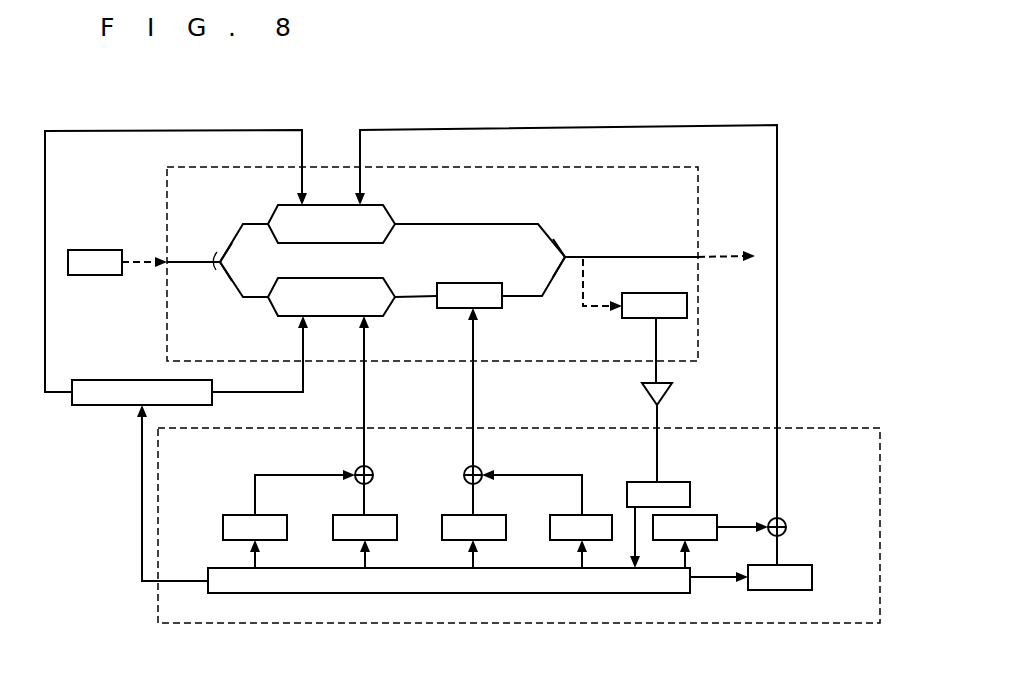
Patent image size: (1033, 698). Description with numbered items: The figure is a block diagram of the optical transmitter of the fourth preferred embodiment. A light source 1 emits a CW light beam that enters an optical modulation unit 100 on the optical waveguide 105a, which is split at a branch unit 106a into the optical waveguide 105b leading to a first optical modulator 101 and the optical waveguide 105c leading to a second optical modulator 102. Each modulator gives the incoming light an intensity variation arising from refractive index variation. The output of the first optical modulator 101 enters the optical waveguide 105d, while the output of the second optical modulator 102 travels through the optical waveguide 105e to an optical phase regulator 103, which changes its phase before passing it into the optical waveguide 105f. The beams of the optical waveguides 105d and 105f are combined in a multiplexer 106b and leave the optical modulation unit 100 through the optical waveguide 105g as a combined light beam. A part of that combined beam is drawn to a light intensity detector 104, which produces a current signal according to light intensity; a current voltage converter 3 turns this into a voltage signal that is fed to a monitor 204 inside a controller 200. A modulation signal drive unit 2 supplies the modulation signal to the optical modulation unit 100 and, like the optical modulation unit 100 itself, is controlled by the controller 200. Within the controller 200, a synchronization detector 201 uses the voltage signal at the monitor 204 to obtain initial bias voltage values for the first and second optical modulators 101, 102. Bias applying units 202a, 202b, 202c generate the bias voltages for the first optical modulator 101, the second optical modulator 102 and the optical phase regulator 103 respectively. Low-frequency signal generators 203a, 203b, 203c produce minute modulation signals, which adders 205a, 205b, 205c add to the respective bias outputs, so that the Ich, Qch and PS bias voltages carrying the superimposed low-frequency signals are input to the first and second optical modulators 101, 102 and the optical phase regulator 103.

The light source 1 is at (85, 250).
The modulation signal drive unit 2 is at (87, 380).
The current voltage converter 3 is at (672, 384).
The optical modulation unit 100 is at (602, 166).
The first optical modulator 101 is at (380, 206).
The second optical modulator 102 is at (364, 278).
The optical phase regulator 103 is at (452, 283).
The light intensity detector 104 is at (630, 293).
The optical waveguide 105a is at (188, 260).
The optical waveguide 105b is at (238, 232).
The optical waveguide 105c is at (232, 292).
The optical waveguide 105d is at (503, 224).
The optical waveguide 105e is at (420, 298).
The optical waveguide 105f is at (522, 297).
The optical waveguide 105g is at (642, 256).
The branch unit 106a is at (226, 262).
The multiplexer 106b is at (568, 254).
The controller 200 is at (543, 428).
The synchronization detector 201 is at (513, 594).
The bias applying unit 202a is at (800, 565).
The bias applying unit 202b is at (352, 515).
The bias applying unit 202c is at (465, 514).
The low-frequency signal generator 203a is at (697, 515).
The low-frequency signal generator 203b is at (243, 515).
The low-frequency signal generator 203c is at (570, 514).
The monitor 204 is at (678, 482).
The adder 205a is at (787, 520).
The adder 205b is at (356, 468).
The adder 205c is at (464, 468).